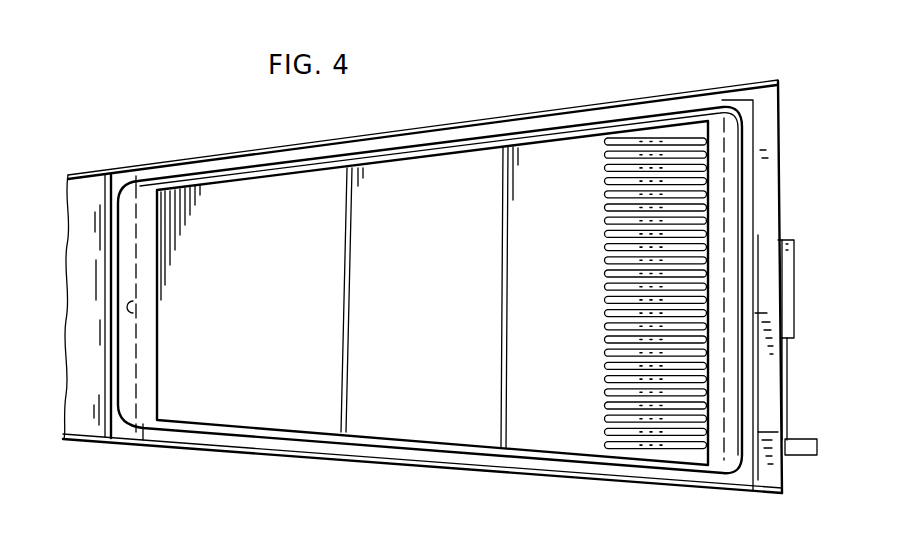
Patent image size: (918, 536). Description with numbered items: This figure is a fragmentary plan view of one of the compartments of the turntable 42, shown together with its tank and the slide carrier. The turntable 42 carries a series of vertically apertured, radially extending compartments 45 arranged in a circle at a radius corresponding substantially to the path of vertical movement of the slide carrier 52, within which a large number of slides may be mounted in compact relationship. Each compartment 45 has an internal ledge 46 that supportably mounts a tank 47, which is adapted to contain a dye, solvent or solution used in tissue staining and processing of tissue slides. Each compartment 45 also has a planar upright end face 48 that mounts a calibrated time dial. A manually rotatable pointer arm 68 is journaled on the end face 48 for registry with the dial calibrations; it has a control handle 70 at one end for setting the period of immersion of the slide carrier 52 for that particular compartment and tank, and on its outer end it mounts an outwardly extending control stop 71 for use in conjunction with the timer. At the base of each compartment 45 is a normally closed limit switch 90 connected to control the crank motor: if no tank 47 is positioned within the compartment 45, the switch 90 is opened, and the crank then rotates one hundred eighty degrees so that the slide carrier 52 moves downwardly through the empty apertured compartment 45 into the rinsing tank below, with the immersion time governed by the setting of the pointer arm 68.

The turntable 42 is at (285, 469).
The compartment 45 is at (193, 440).
The internal ledge 46 is at (124, 353).
The tank 47 is at (458, 136).
The planar upright end face 48 is at (781, 128).
The slide carrier 52 is at (572, 129).
The pointer arm 68 is at (788, 395).
The control handle 70 is at (795, 285).
The control stop 71 is at (797, 446).
The limit switch 90 is at (158, 310).